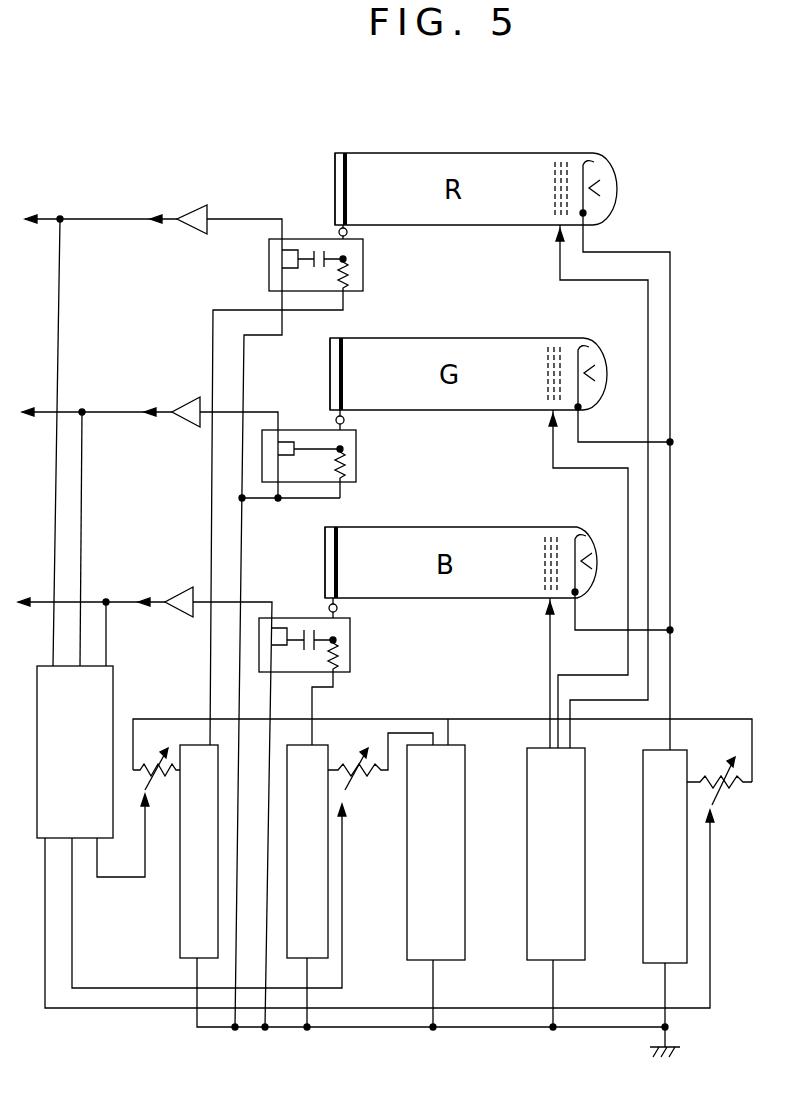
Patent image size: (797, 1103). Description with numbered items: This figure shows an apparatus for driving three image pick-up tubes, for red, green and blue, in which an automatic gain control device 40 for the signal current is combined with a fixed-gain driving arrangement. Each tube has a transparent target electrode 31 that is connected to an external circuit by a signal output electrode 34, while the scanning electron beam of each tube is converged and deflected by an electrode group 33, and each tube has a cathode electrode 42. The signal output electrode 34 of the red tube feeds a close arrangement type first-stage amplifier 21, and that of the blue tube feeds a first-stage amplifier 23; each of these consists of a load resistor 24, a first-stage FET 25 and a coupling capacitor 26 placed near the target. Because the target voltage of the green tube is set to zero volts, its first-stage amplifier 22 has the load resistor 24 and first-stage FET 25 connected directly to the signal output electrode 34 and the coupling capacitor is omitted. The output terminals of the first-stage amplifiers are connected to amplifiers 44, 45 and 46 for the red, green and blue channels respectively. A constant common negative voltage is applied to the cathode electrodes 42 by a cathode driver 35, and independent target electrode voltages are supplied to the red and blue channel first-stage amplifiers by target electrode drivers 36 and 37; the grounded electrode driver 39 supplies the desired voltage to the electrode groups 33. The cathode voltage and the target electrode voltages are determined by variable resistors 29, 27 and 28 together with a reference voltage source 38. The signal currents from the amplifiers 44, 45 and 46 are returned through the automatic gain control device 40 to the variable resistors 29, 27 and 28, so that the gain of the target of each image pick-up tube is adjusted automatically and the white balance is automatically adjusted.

The close arrangement type first-stage amplifier 21 is at (363, 291).
The close arrangement type first-stage amplifier 22 is at (356, 483).
The close arrangement type first-stage amplifier 23 is at (350, 671).
The load resistor 24 is at (352, 266).
The first-stage FET 25 is at (284, 256).
The coupling capacitor 26 is at (320, 240).
The variable resistor 27 is at (163, 785).
The variable resistor 28 is at (358, 785).
The variable resistor 29 is at (727, 793).
The target electrode 31 is at (352, 165).
The electrode group 33 is at (549, 148).
The signal output electrode 34 is at (350, 233).
The cathode driver 35 is at (688, 893).
The target electrode driver 36 is at (178, 935).
The target electrode driver 37 is at (330, 885).
The reference voltage source 38 is at (467, 889).
The electrode driver 39 is at (586, 888).
The automatic gain control device 40 is at (115, 688).
The cathode electrode 42 is at (598, 167).
The amplifier 44 is at (204, 205).
The amplifier 45 is at (184, 398).
The amplifier 46 is at (182, 587).